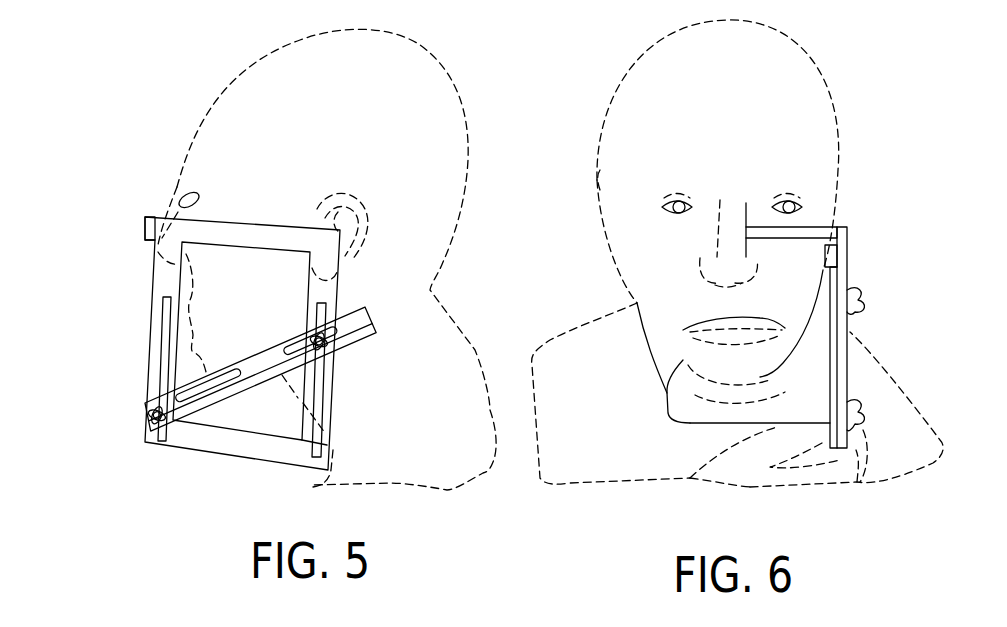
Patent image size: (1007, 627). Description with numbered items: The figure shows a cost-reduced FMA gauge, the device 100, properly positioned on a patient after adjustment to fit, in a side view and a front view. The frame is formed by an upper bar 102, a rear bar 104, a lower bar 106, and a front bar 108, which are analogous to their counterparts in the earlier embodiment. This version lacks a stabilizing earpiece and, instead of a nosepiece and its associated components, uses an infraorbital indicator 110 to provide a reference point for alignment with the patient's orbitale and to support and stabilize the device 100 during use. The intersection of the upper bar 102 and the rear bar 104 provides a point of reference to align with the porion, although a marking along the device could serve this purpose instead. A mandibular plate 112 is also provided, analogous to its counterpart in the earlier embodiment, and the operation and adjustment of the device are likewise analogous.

In FIG. 5, the device 100 is at (108, 173).
In FIG. 5, the upper bar 102 is at (221, 233).
In FIG. 5, the rear bar 104 is at (328, 380).
In FIG. 5, the lower bar 106 is at (210, 372).
In FIG. 5, the front bar 108 is at (156, 368).
In FIG. 6, the front bar 108 is at (850, 337).
In FIG. 5, the infraorbital indicator 110 is at (157, 228).
In FIG. 6, the infraorbital indicator 110 is at (800, 236).
In FIG. 6, the mandibular plate 112 is at (777, 425).